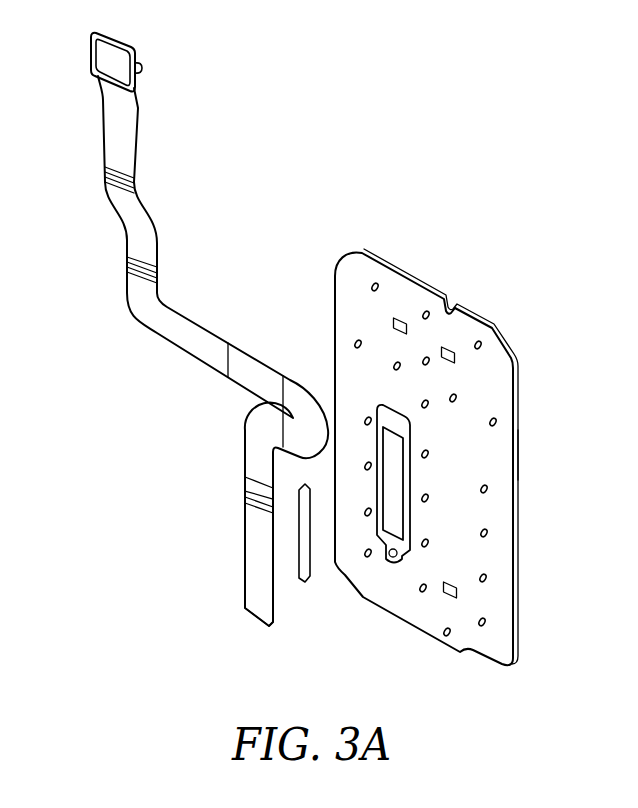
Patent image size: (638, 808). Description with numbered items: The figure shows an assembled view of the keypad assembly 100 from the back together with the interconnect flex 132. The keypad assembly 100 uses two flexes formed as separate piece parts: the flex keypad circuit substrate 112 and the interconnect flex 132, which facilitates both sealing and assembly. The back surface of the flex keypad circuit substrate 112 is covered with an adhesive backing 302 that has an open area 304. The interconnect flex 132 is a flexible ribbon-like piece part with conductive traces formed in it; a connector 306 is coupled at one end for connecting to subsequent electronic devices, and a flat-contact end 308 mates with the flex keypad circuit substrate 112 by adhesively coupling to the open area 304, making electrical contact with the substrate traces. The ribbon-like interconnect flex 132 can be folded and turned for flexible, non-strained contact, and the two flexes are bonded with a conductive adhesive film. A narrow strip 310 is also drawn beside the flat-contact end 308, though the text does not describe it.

The keypad assembly 100 is at (516, 708).
The flex keypad circuit substrate 112 is at (504, 452).
The interconnect flex 132 is at (135, 183).
The adhesive backing 302 is at (349, 264).
The open area 304 is at (398, 477).
The connector 306 is at (112, 47).
The flat-contact end 308 is at (256, 582).
The stiffener strip 310 is at (306, 586).